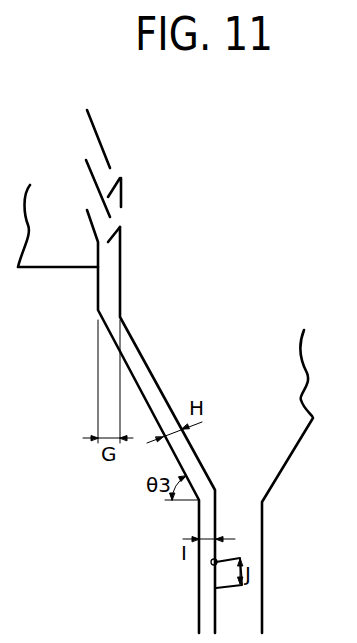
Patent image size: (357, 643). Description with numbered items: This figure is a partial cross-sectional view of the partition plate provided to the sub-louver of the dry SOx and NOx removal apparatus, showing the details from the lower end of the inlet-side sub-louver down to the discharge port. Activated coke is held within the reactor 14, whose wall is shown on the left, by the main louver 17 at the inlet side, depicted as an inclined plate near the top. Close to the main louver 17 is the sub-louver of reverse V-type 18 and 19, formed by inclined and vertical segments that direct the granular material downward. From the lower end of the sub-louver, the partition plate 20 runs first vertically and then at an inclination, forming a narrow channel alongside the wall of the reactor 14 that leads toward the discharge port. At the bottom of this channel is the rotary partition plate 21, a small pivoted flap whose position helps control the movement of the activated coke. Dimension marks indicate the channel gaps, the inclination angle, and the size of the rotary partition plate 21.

The reactor 14 is at (97, 298).
The main louver 17 is at (98, 130).
The sub-louver of reverse V-type 18 is at (118, 182).
The sub-louver of reverse V-type 19 is at (122, 188).
The partition plate 20 is at (132, 335).
The rotary partition plate 21 is at (217, 578).